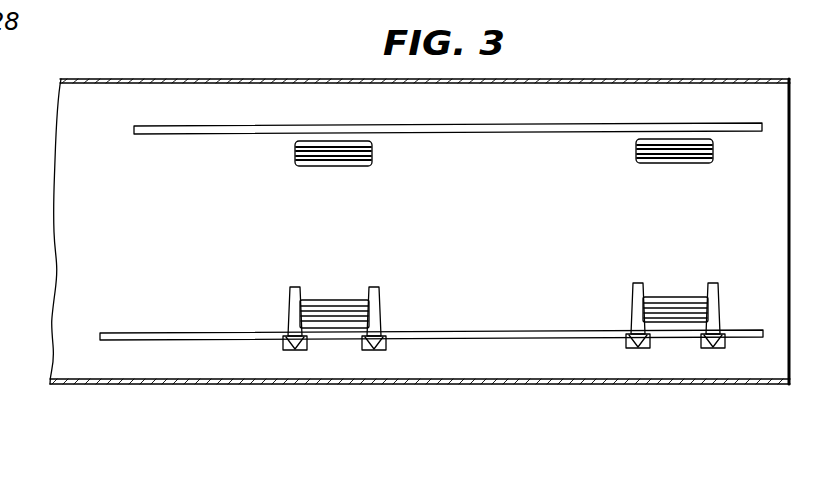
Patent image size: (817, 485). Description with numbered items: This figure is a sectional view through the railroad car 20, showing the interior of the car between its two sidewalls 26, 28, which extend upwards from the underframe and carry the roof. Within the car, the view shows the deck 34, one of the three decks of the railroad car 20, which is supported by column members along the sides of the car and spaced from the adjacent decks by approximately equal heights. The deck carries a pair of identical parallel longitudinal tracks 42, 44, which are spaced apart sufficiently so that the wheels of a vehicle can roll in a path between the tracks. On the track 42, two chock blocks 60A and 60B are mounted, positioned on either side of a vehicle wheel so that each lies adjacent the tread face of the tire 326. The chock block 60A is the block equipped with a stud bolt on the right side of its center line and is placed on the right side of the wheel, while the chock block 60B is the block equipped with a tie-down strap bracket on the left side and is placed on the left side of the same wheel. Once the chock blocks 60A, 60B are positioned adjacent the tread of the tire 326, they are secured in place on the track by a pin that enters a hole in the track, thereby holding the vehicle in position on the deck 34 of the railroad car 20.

The railroad car 20 is at (420, 223).
The sidewall 26 is at (189, 386).
The sidewall 28 is at (188, 80).
The deck 34 is at (152, 246).
The longitudinal track 42 is at (489, 333).
The longitudinal track 44 is at (516, 126).
The tire 326 is at (328, 308).
The chock block 60A is at (381, 318).
The chock block 60B is at (290, 294).